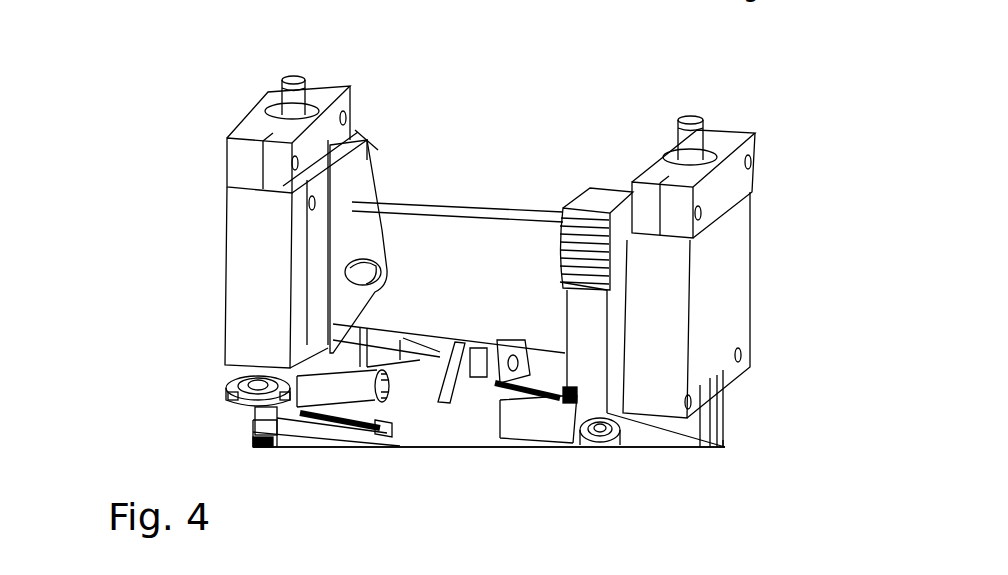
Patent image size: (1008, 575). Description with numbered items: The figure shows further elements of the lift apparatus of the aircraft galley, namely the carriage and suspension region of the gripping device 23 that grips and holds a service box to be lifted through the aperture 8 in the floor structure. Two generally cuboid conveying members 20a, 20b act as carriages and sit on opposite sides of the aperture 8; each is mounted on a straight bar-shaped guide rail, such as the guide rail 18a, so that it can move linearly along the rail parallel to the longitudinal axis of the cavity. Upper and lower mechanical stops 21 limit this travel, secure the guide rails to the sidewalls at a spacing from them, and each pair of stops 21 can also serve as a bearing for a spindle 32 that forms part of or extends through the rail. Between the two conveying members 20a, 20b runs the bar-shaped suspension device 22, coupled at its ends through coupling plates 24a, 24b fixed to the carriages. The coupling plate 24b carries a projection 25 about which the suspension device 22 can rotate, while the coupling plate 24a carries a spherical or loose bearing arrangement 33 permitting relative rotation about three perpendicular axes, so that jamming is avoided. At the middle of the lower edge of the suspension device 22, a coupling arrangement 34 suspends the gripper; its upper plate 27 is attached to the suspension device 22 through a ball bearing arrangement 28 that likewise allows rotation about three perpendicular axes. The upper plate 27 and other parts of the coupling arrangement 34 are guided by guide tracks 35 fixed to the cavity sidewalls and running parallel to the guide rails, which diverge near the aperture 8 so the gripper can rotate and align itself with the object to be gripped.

The aperture 8 is at (503, 14).
The guide rail 18a is at (700, 425).
The conveying member 20a is at (725, 297).
The conveying member 20b is at (252, 228).
The mechanical stop 21 is at (255, 122).
The suspension device 22 is at (463, 232).
The gripping device 23 is at (167, 347).
The coupling plate 24a is at (615, 370).
The coupling plate 24b is at (348, 170).
The projection 25 is at (348, 232).
The upper plate 27 is at (420, 428).
The ball bearing arrangement 28 is at (473, 398).
The spindle 32 is at (290, 74).
The loose bearing arrangement 33 is at (604, 195).
The coupling arrangement 34 is at (308, 452).
The guide track 35 is at (360, 357).